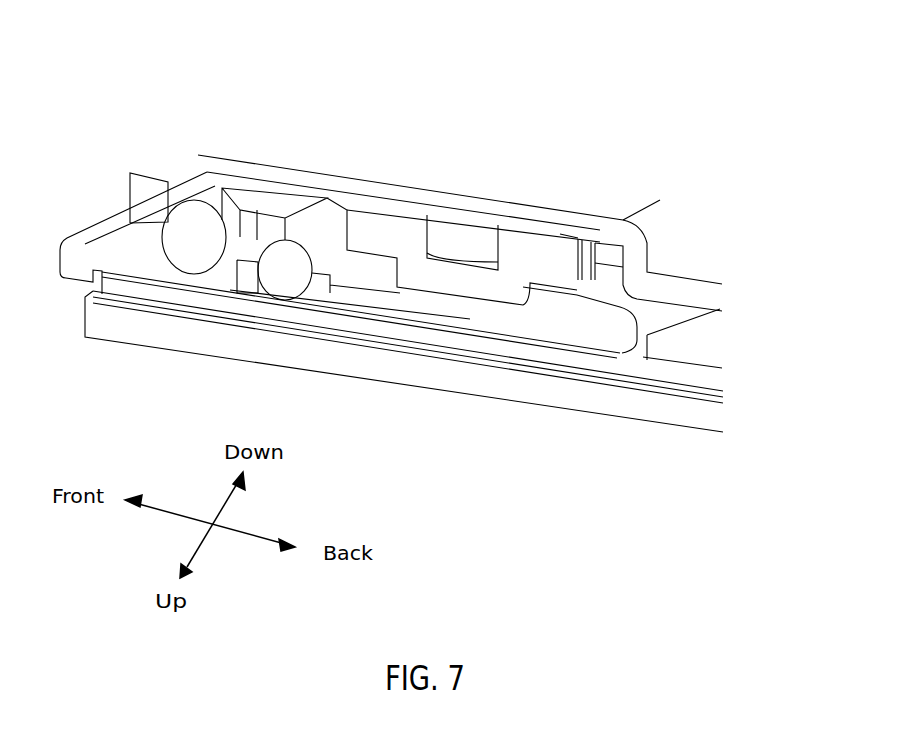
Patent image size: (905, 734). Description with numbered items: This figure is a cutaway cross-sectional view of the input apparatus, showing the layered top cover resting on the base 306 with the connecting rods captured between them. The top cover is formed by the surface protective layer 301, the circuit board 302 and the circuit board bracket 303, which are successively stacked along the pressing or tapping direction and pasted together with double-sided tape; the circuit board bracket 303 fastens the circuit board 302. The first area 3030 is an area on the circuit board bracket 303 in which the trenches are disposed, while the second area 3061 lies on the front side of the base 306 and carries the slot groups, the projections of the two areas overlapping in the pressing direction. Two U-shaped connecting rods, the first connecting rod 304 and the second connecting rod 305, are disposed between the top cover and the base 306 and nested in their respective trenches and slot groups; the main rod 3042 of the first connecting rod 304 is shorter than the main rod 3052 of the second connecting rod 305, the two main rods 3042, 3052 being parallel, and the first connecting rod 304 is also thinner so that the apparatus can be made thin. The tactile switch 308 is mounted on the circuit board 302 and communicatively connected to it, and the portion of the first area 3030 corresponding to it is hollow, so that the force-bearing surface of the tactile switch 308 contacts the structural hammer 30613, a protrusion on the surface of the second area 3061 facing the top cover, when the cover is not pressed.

The surface protective layer 301 is at (652, 418).
The circuit board 302 is at (715, 383).
The circuit board bracket 303 is at (83, 245).
The first connecting rod 304 is at (287, 298).
The second connecting rod 305 is at (172, 250).
The base 306 is at (707, 277).
The tactile switch 308 is at (458, 318).
The first area 3030 is at (398, 326).
The main rod of the first connecting rod 3042 is at (325, 240).
The main rod of the second connecting rod 3052 is at (208, 195).
The second area 3061 is at (300, 127).
The structural hammer 30613 is at (510, 280).